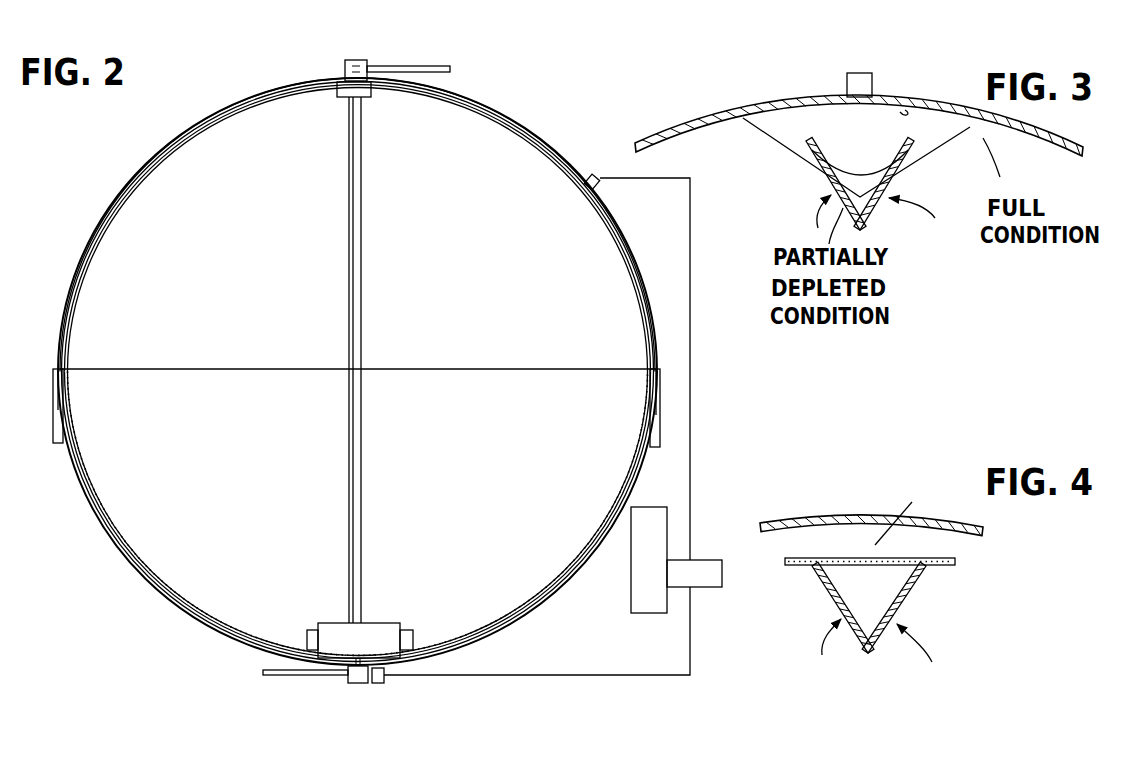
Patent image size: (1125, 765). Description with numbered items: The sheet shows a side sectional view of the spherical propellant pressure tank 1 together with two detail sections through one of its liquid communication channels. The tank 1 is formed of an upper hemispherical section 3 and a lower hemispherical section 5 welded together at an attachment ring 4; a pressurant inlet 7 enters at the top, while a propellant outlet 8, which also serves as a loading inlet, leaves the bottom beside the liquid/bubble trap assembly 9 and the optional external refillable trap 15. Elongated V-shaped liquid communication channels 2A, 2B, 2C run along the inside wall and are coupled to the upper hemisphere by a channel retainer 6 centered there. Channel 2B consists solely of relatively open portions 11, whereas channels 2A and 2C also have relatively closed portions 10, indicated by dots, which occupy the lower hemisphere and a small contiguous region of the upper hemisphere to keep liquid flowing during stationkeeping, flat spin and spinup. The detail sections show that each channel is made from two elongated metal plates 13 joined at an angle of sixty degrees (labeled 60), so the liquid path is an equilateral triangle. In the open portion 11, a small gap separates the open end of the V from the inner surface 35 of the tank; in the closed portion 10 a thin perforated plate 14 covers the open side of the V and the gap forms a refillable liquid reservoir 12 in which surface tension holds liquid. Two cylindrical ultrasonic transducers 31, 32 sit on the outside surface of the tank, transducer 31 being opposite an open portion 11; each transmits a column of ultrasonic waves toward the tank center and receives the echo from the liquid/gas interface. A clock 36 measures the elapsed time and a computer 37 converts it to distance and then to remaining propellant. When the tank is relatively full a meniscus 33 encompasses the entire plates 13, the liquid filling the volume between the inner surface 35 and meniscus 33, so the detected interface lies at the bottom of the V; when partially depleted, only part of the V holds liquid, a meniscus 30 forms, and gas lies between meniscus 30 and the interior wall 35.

In FIG. 2, the propellant pressure tank 1 is at (178, 122).
In FIG. 2, the V-shaped liquid communication channel 2A is at (83, 302).
In FIG. 2, the V-shaped liquid communication channel 2B is at (365, 233).
In FIG. 2, the V-shaped liquid communication channel 2C is at (601, 240).
In FIG. 2, the upper hemispherical section 3 is at (565, 135).
In FIG. 3, the upper hemispherical section 3 is at (793, 96).
In FIG. 2, the attachment ring 4 is at (53, 412).
In FIG. 2, the lower hemispherical section 5 is at (358, 515).
In FIG. 4, the lower hemispherical section 5 is at (810, 517).
In FIG. 2, the channel retainer 6 is at (345, 65).
In FIG. 2, the pressurant inlet 7 is at (449, 68).
In FIG. 2, the propellant outlet 8 is at (270, 676).
In FIG. 2, the liquid/bubble trap assembly 9 is at (378, 621).
In FIG. 2, the relatively closed channel portion 10 is at (115, 529).
In FIG. 4, the relatively closed channel portion 10 is at (913, 586).
In FIG. 2, the relatively open channel portion 11 is at (268, 106).
In FIG. 3, the relatively open channel portion 11 is at (906, 155).
In FIG. 4, the refillable liquid reservoir 12 is at (905, 506).
In FIG. 3, the channel plate 13 is at (821, 170).
In FIG. 4, the channel plate 13 is at (836, 603).
In FIG. 4, the foraminous plate 14 is at (802, 566).
In FIG. 2, the external refillable trap 15 is at (414, 633).
In FIG. 3, the meniscus 30 is at (862, 172).
In FIG. 2, the ultrasonic transducer 31 is at (600, 188).
In FIG. 3, the ultrasonic transducer 31 is at (866, 50).
In FIG. 2, the ultrasonic transducer 32 is at (380, 684).
In FIG. 3, the meniscus 33 is at (767, 134).
In FIG. 3, the inner surface of tank 35 is at (902, 112).
In FIG. 2, the clock 36 is at (712, 588).
In FIG. 2, the computer 37 is at (645, 614).
In FIG. 3, the 60 degree angle of sensor legs 60 is at (894, 221).
In FIG. 4, the 60 degree angle of sensor legs 60 is at (902, 649).